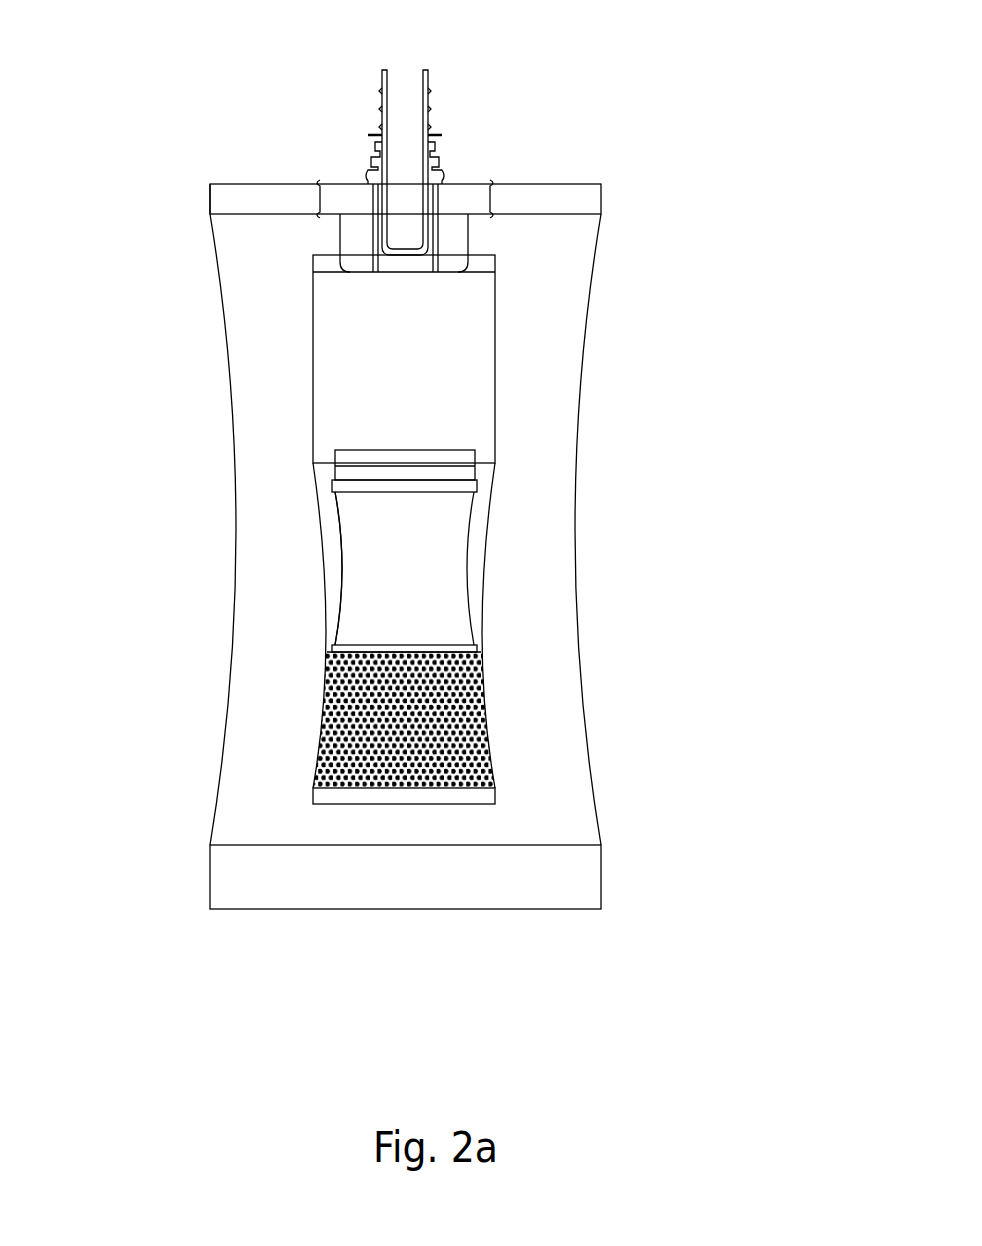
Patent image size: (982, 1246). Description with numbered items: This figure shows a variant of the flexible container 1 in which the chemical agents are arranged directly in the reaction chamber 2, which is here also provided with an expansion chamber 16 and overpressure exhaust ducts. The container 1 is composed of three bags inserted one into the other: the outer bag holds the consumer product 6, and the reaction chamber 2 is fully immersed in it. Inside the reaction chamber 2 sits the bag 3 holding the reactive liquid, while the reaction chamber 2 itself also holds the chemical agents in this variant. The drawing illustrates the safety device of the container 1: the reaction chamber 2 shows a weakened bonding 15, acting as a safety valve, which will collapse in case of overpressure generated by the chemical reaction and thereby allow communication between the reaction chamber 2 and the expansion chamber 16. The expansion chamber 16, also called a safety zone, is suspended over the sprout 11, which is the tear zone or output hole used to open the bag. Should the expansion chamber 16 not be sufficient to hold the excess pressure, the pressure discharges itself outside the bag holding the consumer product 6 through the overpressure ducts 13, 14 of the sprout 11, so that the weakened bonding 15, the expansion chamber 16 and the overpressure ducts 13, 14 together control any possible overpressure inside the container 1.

The flexible container 1 is at (67, 68).
The reaction chamber 2 is at (333, 605).
The bag holding the reactive liquid 3 is at (340, 538).
The consumer product 6 is at (343, 836).
The sprout 11 is at (405, 135).
The overpressure duct 13 is at (458, 203).
The overpressure duct 14 is at (352, 194).
The weakened bonding 15 is at (365, 473).
The expansion chamber 16 is at (390, 348).